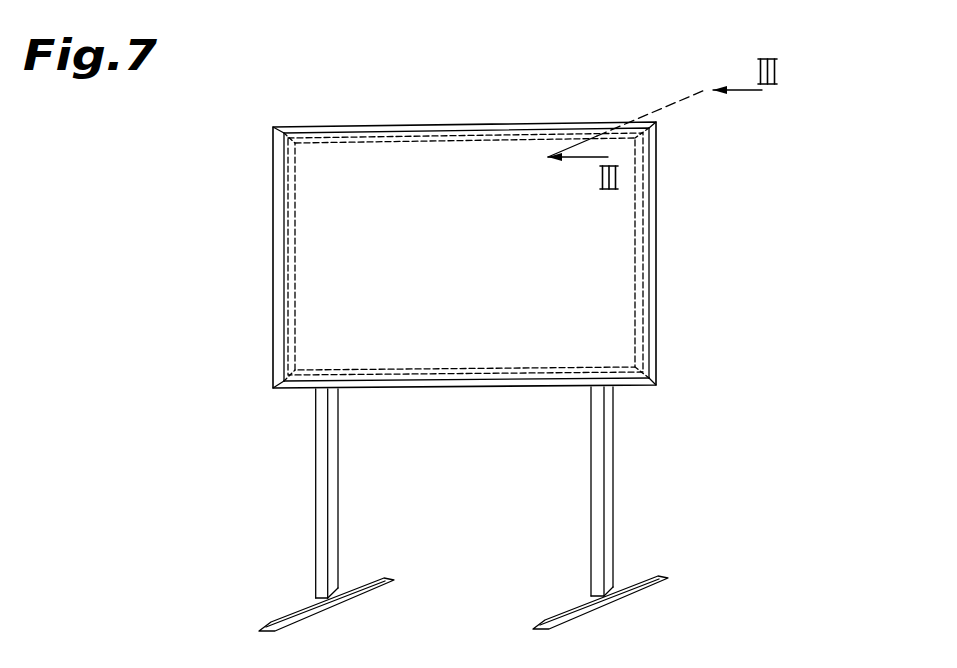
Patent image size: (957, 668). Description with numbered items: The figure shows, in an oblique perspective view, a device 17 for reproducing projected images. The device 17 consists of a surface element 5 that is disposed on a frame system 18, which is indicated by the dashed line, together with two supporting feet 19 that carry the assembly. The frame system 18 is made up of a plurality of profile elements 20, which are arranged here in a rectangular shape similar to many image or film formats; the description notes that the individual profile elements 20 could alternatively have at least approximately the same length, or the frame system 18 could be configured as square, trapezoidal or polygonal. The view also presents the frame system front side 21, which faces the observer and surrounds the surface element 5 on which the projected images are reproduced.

The surface element 5 is at (393, 268).
The device 17 is at (785, 98).
The frame system 18 is at (452, 378).
The supporting feet 19 is at (325, 535).
The profile elements 20 is at (480, 124).
The frame system front side 21 is at (278, 185).